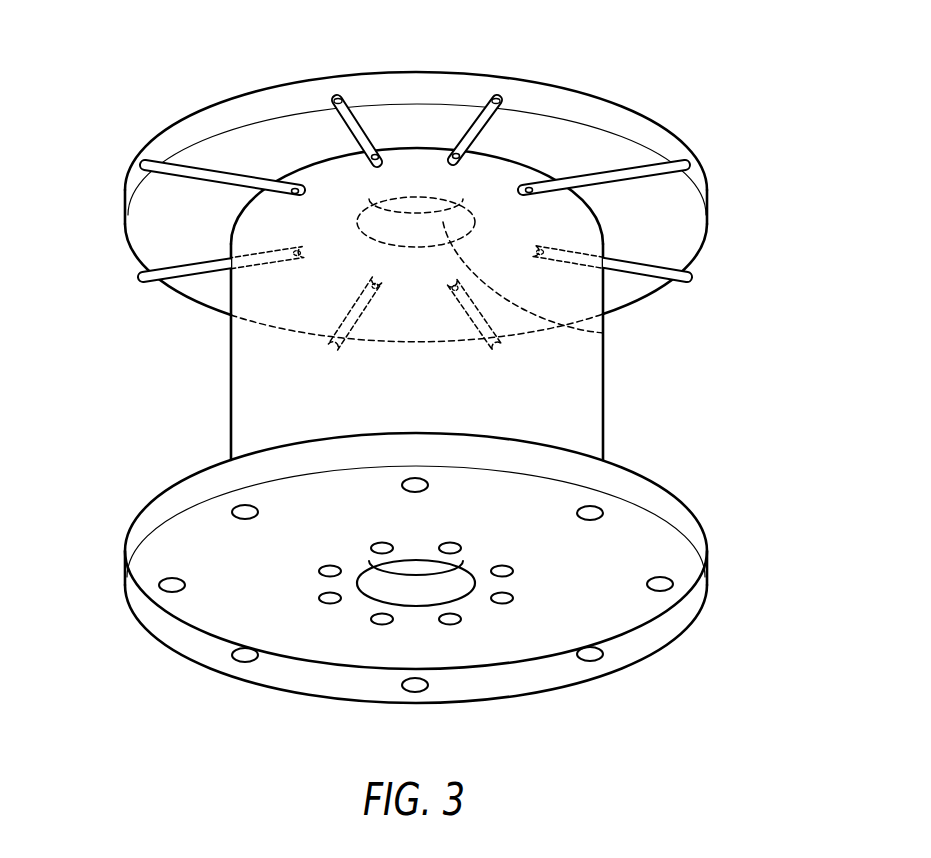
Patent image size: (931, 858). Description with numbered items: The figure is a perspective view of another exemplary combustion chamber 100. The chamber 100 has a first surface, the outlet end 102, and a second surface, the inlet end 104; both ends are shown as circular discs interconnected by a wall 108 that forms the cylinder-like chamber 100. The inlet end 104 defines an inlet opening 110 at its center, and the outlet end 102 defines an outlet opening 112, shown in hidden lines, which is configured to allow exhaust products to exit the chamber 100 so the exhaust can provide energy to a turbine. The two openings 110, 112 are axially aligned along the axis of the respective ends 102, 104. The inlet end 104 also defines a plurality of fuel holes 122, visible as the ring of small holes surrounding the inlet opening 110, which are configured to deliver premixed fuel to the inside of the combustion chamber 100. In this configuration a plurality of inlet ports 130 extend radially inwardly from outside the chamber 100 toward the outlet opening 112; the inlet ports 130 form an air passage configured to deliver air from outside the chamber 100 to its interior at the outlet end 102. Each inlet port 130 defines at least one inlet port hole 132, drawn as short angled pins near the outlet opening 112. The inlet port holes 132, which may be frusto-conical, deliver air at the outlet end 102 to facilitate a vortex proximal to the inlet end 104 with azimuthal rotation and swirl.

The combustion chamber 100 is at (440, 385).
The outlet end 102 is at (673, 232).
The inlet end 104 is at (622, 653).
The wall 108 is at (603, 387).
The inlet opening 110 is at (413, 590).
The outlet opening 112 is at (603, 333).
The fuel holes 122 is at (370, 548).
The inlet ports 130 is at (345, 130).
The inlet port holes 132 is at (455, 158).